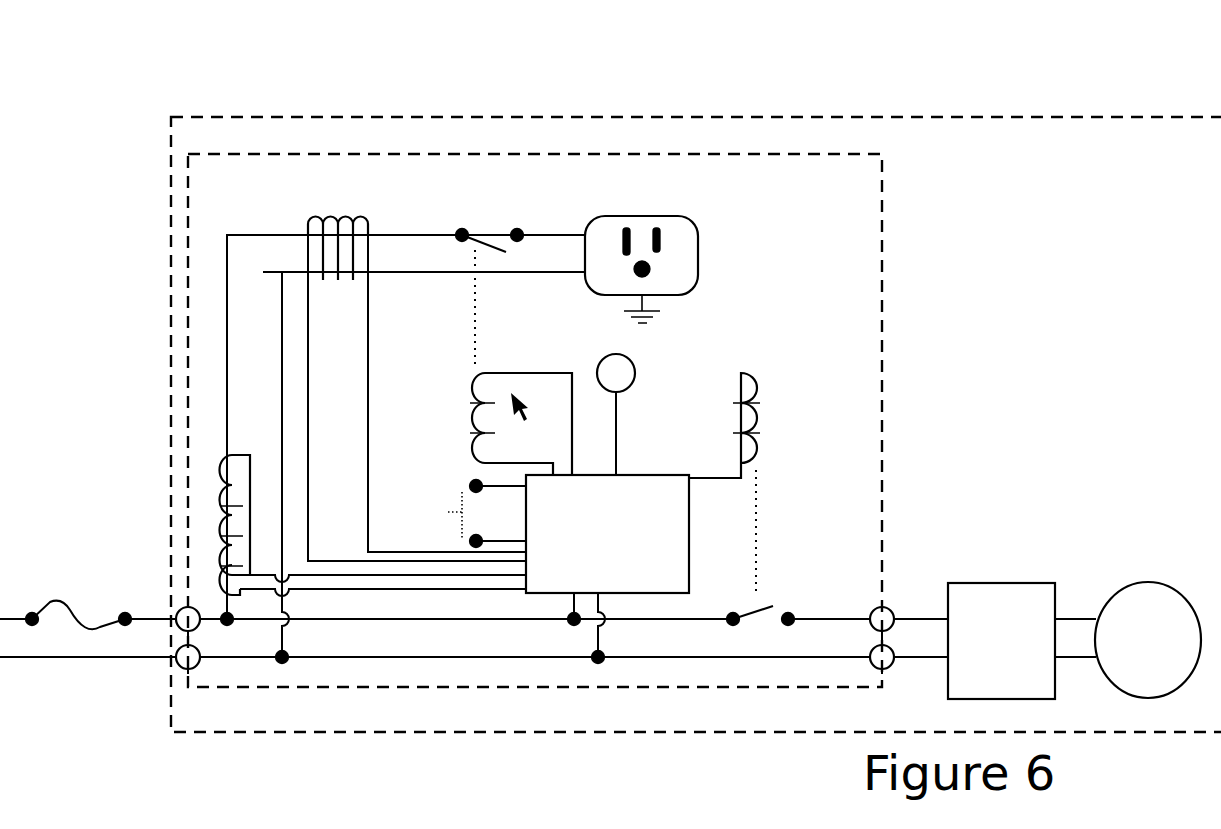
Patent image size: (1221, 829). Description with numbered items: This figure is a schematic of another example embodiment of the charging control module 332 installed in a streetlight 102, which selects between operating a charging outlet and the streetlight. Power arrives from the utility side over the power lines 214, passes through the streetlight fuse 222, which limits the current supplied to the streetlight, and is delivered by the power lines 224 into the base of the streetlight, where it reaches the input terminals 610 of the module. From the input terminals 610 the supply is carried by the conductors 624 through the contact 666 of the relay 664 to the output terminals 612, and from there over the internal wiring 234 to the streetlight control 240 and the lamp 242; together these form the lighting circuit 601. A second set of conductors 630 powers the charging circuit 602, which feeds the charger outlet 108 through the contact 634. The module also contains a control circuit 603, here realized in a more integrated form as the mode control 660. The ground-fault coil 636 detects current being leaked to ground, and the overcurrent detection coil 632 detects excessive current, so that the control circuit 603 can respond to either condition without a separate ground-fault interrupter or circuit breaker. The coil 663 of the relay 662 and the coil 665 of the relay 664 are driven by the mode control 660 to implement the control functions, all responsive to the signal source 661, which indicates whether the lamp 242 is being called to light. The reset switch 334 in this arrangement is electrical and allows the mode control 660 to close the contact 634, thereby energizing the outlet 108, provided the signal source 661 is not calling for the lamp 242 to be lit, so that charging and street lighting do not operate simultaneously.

The streetlight 102 is at (262, 115).
The charging control module 332 is at (385, 153).
The charging circuit 602 is at (922, 303).
The conductors 630 is at (241, 235).
The ground-fault coil 636 is at (330, 218).
The contact 634 is at (483, 244).
The outlet 108 is at (698, 246).
The control circuit 603 is at (684, 356).
The signal source 661 is at (605, 360).
The coil of relay 663 is at (458, 395).
The relay 662 is at (523, 423).
The relay 664 is at (754, 350).
The coil of relay 665 is at (775, 390).
The reset switch 334 is at (462, 505).
The mode control 660 is at (689, 555).
The contact 666 is at (772, 607).
The overcurrent detection coil 632 is at (250, 476).
The conductors 624 is at (385, 597).
The power lines 214 is at (10, 621).
The streetlight fuse 222 is at (77, 603).
The power lines 224 is at (150, 613).
The input terminals 610 is at (200, 628).
The output terminals 612 is at (870, 628).
The lighting circuit 601 is at (991, 532).
The internal wiring 234 is at (913, 617).
The control 240 is at (1010, 583).
The lamp 242 is at (1125, 585).